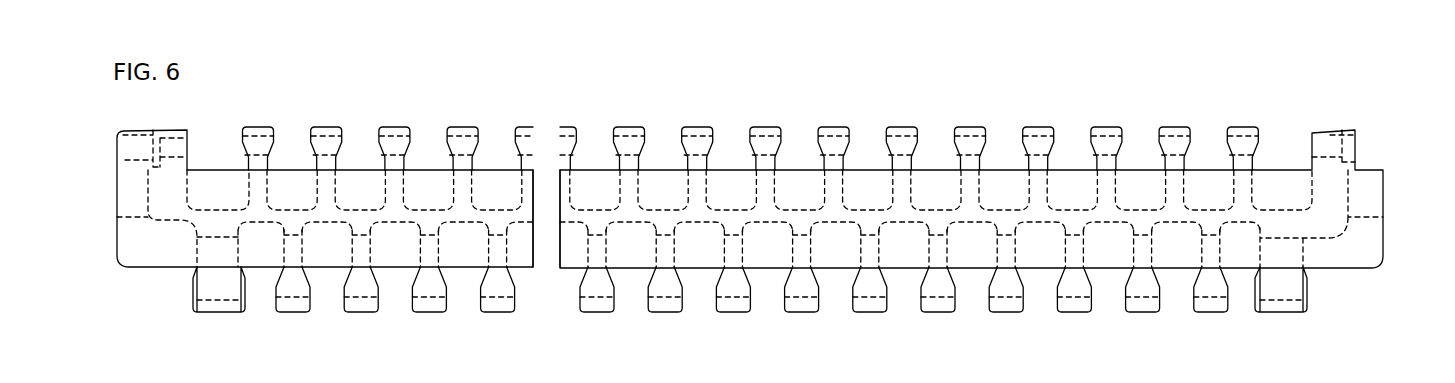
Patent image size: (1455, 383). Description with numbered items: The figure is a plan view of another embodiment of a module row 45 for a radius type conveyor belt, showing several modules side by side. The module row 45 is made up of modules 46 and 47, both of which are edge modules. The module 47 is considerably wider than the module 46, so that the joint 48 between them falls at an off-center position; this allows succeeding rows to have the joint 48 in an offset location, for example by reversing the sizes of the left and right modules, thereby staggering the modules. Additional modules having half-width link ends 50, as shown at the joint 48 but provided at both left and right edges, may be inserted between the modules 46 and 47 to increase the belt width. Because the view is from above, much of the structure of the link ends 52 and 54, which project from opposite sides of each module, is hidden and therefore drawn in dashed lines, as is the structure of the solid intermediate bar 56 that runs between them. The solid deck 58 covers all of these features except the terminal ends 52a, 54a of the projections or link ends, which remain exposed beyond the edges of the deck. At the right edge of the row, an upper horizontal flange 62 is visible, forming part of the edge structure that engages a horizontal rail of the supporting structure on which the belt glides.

The module row 45 is at (1267, 93).
The module 46 is at (422, 115).
The module 47 is at (1300, 117).
The joint 48 is at (588, 70).
The half-width link ends 50 is at (525, 125).
The link ends 52 is at (832, 125).
The terminal ends 52a is at (1238, 127).
The link ends 54 is at (868, 312).
The terminal ends 54a is at (1277, 313).
The solid intermediate bar 56 is at (1060, 212).
The solid deck 58 is at (172, 246).
The horizontal flange 62 is at (1375, 182).